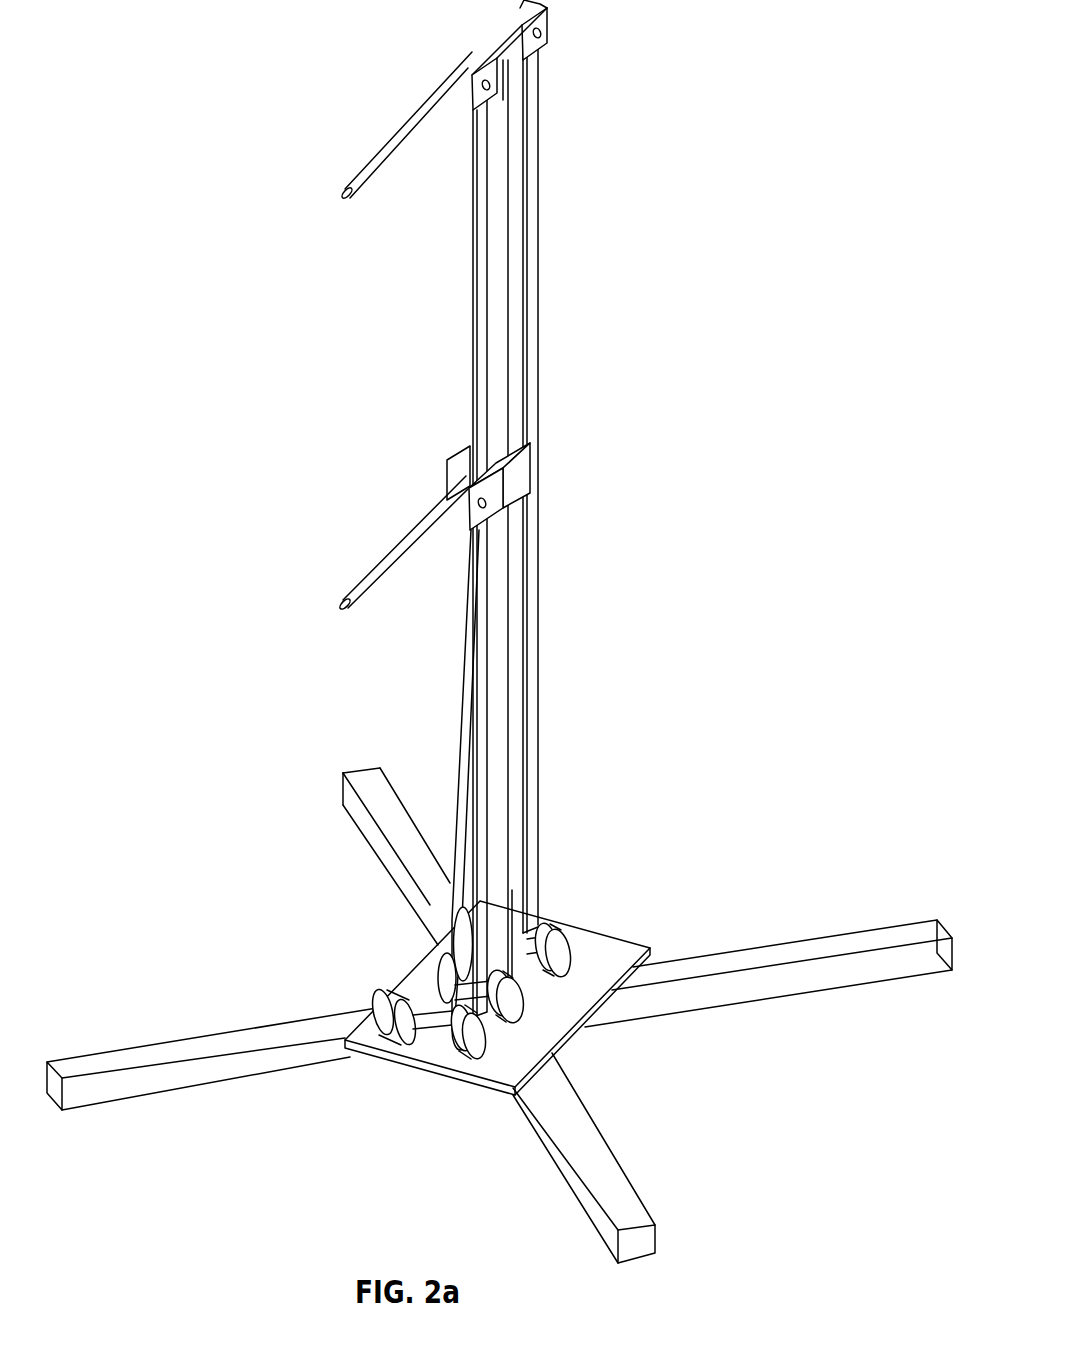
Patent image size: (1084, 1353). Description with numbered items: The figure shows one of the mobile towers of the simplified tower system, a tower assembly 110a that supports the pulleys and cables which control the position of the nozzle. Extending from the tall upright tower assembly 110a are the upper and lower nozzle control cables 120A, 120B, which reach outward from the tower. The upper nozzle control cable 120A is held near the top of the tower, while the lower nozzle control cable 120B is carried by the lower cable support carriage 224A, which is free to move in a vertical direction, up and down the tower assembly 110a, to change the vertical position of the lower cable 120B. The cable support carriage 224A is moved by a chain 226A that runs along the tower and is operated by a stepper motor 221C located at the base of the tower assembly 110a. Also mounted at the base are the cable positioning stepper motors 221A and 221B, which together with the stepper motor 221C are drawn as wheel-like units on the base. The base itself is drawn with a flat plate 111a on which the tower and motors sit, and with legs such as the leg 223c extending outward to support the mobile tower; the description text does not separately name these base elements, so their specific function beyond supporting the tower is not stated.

The tower assembly 110a is at (516, 180).
The base plate 111a is at (627, 930).
The upper nozzle control cable 120A is at (338, 175).
The lower nozzle control cable 120B is at (398, 530).
The lower cable support carriage 224A is at (534, 470).
The chain 226A is at (549, 559).
The cable positioning stepper motor 221A is at (403, 1030).
The cable positioning stepper motor 221B is at (512, 1016).
The stepper motor 221C is at (572, 957).
The base leg 223c is at (652, 1255).